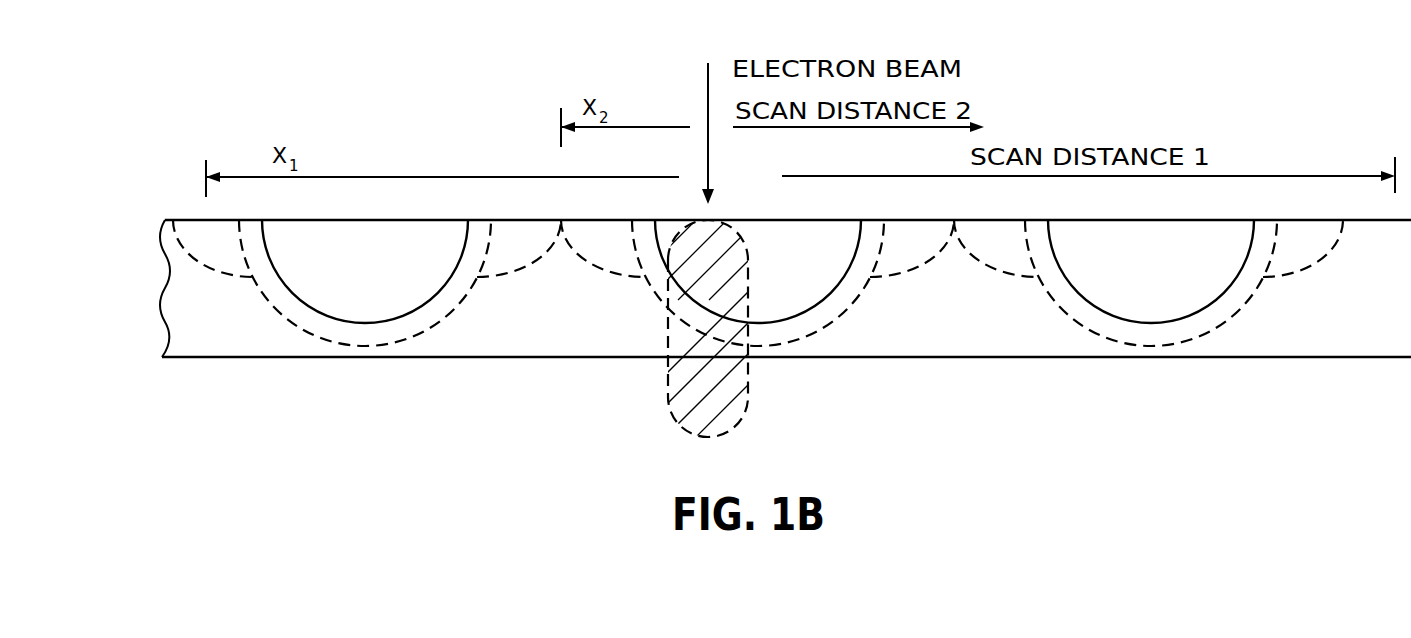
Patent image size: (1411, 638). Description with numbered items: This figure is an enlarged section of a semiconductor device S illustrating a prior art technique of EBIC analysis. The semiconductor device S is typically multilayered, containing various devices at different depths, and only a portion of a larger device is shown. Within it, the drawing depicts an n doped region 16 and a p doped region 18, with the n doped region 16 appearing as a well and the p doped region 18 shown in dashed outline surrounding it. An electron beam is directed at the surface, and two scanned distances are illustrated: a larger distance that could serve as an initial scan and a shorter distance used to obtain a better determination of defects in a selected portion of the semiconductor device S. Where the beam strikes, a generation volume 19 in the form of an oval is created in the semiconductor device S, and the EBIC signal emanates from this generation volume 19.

The n doped region 16 is at (300, 283).
The p doped region 18 is at (407, 328).
The generation volume 19 is at (668, 372).
The semiconductor device S is at (198, 229).